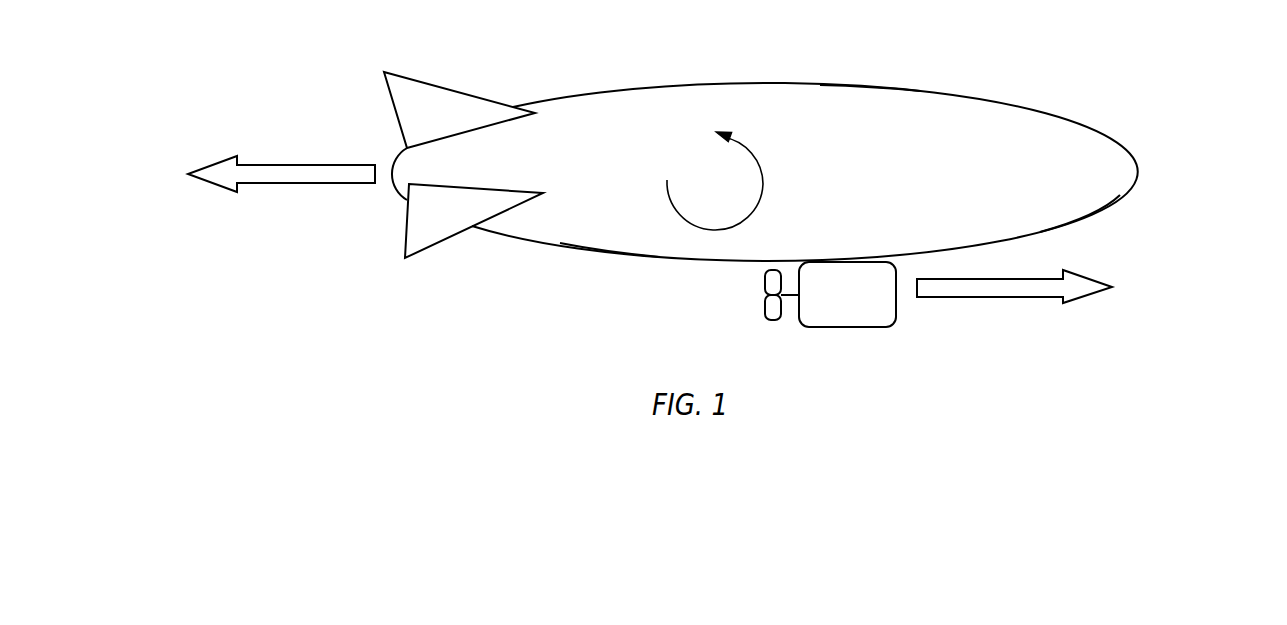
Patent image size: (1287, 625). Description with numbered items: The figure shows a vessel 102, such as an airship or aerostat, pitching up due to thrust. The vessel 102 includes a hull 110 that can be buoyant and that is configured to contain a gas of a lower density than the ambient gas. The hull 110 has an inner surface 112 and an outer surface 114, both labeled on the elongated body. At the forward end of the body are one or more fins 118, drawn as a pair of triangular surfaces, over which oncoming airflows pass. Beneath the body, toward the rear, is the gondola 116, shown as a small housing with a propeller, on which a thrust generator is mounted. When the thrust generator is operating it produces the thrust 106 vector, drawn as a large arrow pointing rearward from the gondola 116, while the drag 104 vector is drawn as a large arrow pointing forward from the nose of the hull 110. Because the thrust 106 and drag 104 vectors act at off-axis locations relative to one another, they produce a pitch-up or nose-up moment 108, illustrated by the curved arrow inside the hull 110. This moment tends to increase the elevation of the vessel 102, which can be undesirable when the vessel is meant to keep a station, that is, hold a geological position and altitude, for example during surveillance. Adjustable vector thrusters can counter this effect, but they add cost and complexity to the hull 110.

The vessel 102 is at (655, 75).
The drag vector 104 is at (297, 164).
The thrust vector 106 is at (1068, 273).
The pitch-up moment 108 is at (711, 177).
The hull 110 is at (605, 253).
The inner surface 112 is at (1082, 219).
The outer surface 114 is at (870, 87).
The gondola 116 is at (855, 327).
The fins 118 is at (415, 103).